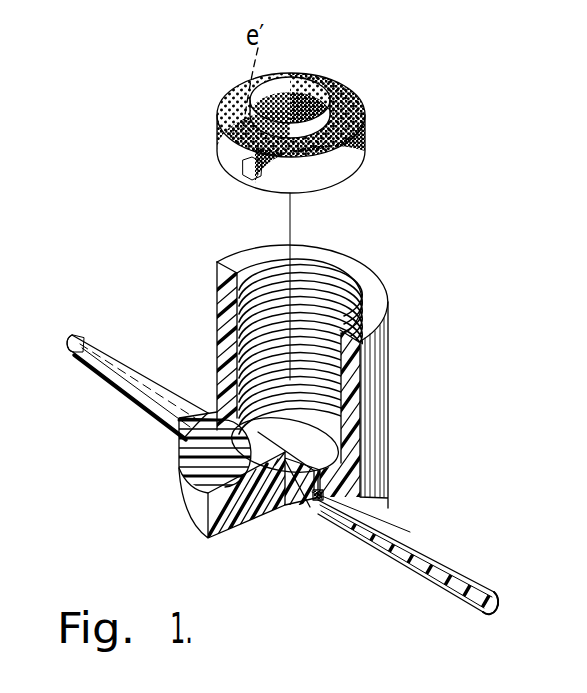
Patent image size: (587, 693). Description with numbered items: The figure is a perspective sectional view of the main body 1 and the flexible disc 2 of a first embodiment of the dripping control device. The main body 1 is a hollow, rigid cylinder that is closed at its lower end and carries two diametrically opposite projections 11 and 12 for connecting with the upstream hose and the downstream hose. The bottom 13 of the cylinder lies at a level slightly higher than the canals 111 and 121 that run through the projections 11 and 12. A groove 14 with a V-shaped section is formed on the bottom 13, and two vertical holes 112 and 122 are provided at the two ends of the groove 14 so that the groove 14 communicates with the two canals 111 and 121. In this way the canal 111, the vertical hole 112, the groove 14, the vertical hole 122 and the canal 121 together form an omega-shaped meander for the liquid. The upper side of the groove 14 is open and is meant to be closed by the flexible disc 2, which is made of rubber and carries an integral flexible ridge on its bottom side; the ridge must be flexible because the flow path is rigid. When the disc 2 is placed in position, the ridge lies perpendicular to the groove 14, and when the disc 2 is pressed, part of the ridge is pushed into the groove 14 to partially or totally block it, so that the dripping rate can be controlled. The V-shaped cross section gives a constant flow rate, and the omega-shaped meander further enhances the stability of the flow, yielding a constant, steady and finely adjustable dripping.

The main body 1 is at (372, 282).
The flexible disc 2 is at (343, 88).
The projection 11 is at (433, 548).
The canal 111 is at (485, 612).
The vertical hole 112 is at (321, 520).
The projection 12 is at (125, 392).
The canal 121 is at (84, 334).
The vertical hole 122 is at (213, 412).
The bottom 13 is at (317, 447).
The groove 14 is at (284, 503).